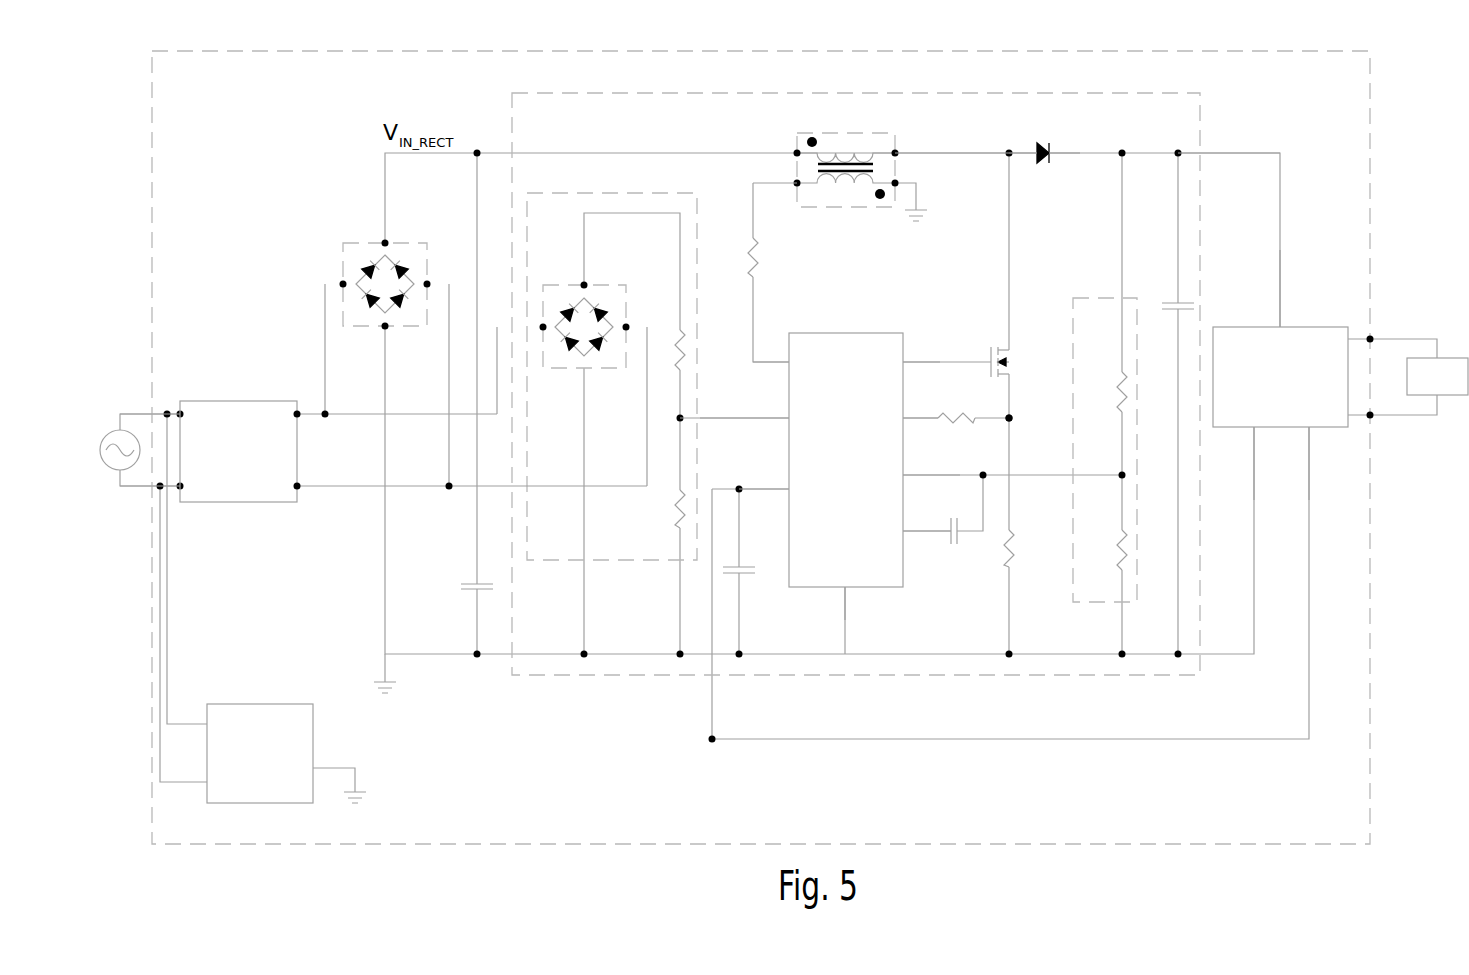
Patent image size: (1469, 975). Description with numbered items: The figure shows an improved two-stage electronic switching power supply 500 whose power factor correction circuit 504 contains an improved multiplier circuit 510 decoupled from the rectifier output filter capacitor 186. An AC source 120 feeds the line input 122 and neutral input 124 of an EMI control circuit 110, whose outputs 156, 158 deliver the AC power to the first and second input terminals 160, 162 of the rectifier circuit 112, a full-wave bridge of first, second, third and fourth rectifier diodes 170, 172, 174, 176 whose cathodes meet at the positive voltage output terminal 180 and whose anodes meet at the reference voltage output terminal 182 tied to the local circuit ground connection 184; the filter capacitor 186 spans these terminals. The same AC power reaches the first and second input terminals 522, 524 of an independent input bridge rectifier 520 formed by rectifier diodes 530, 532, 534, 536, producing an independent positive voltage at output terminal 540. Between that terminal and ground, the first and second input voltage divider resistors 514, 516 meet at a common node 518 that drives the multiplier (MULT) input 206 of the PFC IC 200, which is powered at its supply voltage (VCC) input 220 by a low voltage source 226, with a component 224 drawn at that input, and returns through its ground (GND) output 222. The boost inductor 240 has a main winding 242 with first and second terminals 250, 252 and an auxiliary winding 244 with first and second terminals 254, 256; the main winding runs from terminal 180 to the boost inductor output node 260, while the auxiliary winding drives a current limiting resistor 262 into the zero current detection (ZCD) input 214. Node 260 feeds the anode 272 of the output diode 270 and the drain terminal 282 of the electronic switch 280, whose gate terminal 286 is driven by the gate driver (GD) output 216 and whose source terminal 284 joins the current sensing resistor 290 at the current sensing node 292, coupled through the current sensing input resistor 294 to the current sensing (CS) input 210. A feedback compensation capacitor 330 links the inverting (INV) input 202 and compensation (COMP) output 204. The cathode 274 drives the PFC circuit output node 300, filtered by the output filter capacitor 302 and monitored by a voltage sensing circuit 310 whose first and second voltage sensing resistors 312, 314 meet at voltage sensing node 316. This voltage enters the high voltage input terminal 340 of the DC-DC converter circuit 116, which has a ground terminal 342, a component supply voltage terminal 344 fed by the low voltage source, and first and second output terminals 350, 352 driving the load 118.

The improved two-stage electronic switching power supply 500 is at (402, 51).
The improved power factor correction circuit 504 is at (632, 93).
The improved multiplier circuit 510 is at (610, 193).
The rectifier circuit 112 is at (398, 243).
The first rectifier diode 170 is at (364, 266).
The second rectifier diode 172 is at (408, 270).
The third rectifier diode 174 is at (367, 302).
The fourth rectifier diode 176 is at (404, 302).
The positive voltage output terminal 180 is at (386, 243).
The reference voltage output terminal 182 is at (387, 329).
The first input terminal 160 is at (343, 284).
The second input terminal 162 is at (427, 284).
The independent input bridge rectifier 520 is at (616, 370).
The first rectifier diode 530 is at (566, 316).
The second rectifier diode 532 is at (604, 318).
The third rectifier diode 534 is at (567, 347).
The fourth rectifier diode 536 is at (598, 348).
The independent positive voltage output terminal 540 is at (585, 285).
The first input terminal 522 is at (543, 325).
The second input terminal 524 is at (627, 325).
The first input voltage divider resistor 514 is at (676, 350).
The second input voltage divider resistor 516 is at (676, 507).
The common node 518 is at (683, 417).
The EMI control circuit 110 is at (215, 401).
The EMI first output 156 is at (297, 412).
The EMI second output 158 is at (297, 488).
The AC source 120 is at (107, 436).
The first (line) input 122 is at (180, 412).
The second (neutral) input 124 is at (180, 488).
The low voltage source 226 is at (259, 734).
The local circuit ground connection 184 is at (382, 684).
The rectifier output filter capacitor 186 is at (478, 585).
The VCC capacitor 224 is at (745, 575).
The PFC circuit output filter capacitor 302 is at (1178, 303).
The feedback compensation capacitor 330 is at (957, 536).
The boost inductor 240 is at (833, 133).
The main winding 242 is at (846, 152).
The auxiliary winding 244 is at (866, 186).
The first terminal 250 is at (797, 153).
The second terminal 252 is at (897, 153).
The second terminal 256 is at (797, 183).
The first terminal 254 is at (897, 183).
The boost inductor output node 260 is at (1009, 153).
The current limiting resistor 262 is at (752, 258).
The PFC circuit output diode 270 is at (1041, 160).
The anode 272 is at (1037, 155).
The cathode 274 is at (1050, 153).
The PFC circuit output node 300 is at (1180, 153).
The power factor corrector integrated circuit 200 is at (836, 333).
The zero current detection (ZCD) input 214 is at (789, 362).
The multiplier (MULT) input 206 is at (789, 418).
The supply voltage (VCC) input 220 is at (789, 491).
The ground return (GND) output 222 is at (848, 590).
The gate driver (GD) output 216 is at (905, 362).
The current sensing (CS) input 210 is at (905, 418).
The current sensing input resistor 294 is at (958, 418).
The inverting (INV) input 202 is at (905, 475).
The compensation (COMP) output 204 is at (905, 531).
The current sensing node 292 is at (1011, 418).
The current sensing resistor 290 is at (1012, 553).
The electronic switch 280 is at (990, 362).
The drain terminal 282 is at (994, 350).
The source terminal 284 is at (1006, 378).
The gate terminal 286 is at (1006, 375).
The voltage sensing circuit 310 is at (1080, 298).
The first voltage sensing resistor 312 is at (1120, 388).
The voltage sensing node 316 is at (1120, 475).
The second voltage sensing resistor 314 is at (1120, 548).
The high voltage input terminal 340 is at (1282, 327).
The DC-DC converter circuit 116 is at (1268, 327).
The ground terminal 342 is at (1256, 428).
The component supply voltage terminal 344 is at (1311, 428).
The first output terminal 350 is at (1372, 338).
The second output terminal 352 is at (1372, 416).
The load 118 is at (1455, 358).